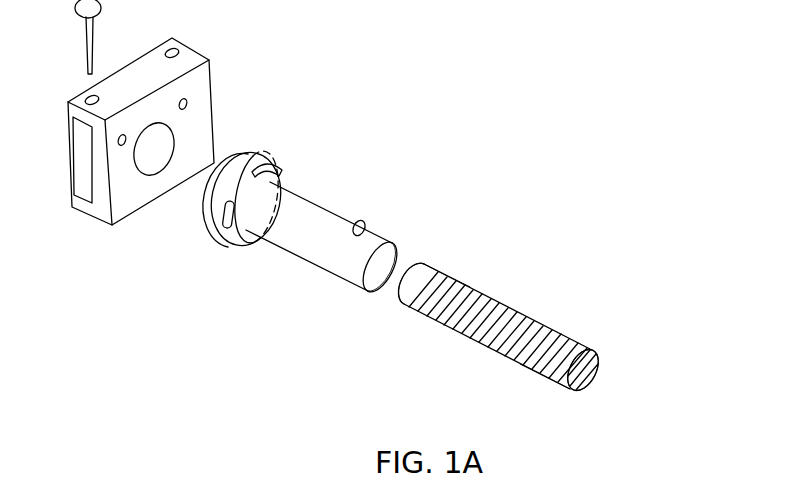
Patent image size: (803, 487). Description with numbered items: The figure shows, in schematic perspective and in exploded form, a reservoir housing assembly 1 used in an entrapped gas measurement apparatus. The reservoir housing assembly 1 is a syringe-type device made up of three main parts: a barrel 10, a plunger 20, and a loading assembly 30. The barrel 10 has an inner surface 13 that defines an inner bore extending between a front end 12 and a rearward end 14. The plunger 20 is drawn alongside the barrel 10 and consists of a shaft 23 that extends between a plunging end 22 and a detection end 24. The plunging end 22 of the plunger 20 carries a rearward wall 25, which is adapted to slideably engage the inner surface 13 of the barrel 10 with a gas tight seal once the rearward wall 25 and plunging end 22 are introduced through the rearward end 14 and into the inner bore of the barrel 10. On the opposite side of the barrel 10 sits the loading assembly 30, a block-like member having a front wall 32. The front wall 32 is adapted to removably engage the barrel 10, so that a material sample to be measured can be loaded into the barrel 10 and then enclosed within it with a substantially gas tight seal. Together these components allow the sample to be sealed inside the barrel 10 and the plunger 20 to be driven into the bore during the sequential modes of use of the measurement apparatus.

The reservoir housing assembly 1 is at (477, 146).
The barrel 10 is at (321, 199).
The front end 12 is at (266, 204).
The inner surface 13 is at (361, 223).
The rearward end 14 is at (382, 292).
The plunger 20 is at (514, 298).
The plunging end 22 is at (447, 272).
The shaft 23 is at (550, 333).
The detection end 24 is at (591, 347).
The rearward wall 25 is at (406, 280).
The loading assembly 30 is at (199, 49).
The front wall 32 is at (150, 163).